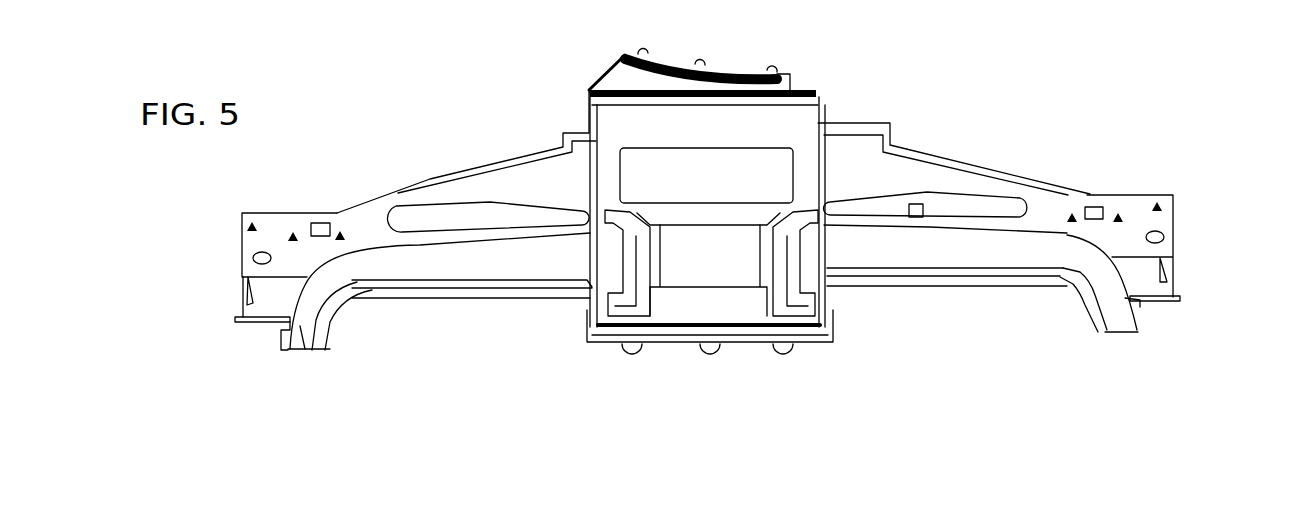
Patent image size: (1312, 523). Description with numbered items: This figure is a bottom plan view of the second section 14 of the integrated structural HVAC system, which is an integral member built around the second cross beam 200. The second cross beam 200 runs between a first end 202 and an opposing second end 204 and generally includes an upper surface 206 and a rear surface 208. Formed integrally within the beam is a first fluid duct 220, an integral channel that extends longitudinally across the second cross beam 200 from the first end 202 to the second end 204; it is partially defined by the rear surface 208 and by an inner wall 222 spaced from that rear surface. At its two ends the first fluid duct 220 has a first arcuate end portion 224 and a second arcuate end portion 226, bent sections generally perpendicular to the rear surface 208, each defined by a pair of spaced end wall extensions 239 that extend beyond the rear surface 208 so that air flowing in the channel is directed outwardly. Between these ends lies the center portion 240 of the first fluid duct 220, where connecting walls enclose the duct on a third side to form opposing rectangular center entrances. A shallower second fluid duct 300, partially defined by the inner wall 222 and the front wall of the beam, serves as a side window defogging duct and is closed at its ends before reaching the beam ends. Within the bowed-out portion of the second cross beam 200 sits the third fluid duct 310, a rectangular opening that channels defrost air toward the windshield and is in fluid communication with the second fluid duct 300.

The second section 14 is at (661, 43).
The second cross beam 200 is at (707, 261).
The first end 202 is at (240, 238).
The second end 204 is at (1160, 220).
The upper surface 206 is at (365, 226).
The rear surface 208 is at (455, 297).
The first fluid duct 220 is at (535, 262).
The inner wall 222 is at (374, 250).
The first arcuate end portion 224 is at (295, 352).
The second arcuate end portion 226 is at (1126, 302).
The spaced end wall extensions 239 is at (319, 340).
The center portion 240 is at (734, 243).
The second fluid duct 300 is at (957, 191).
The third fluid duct 310 is at (763, 167).